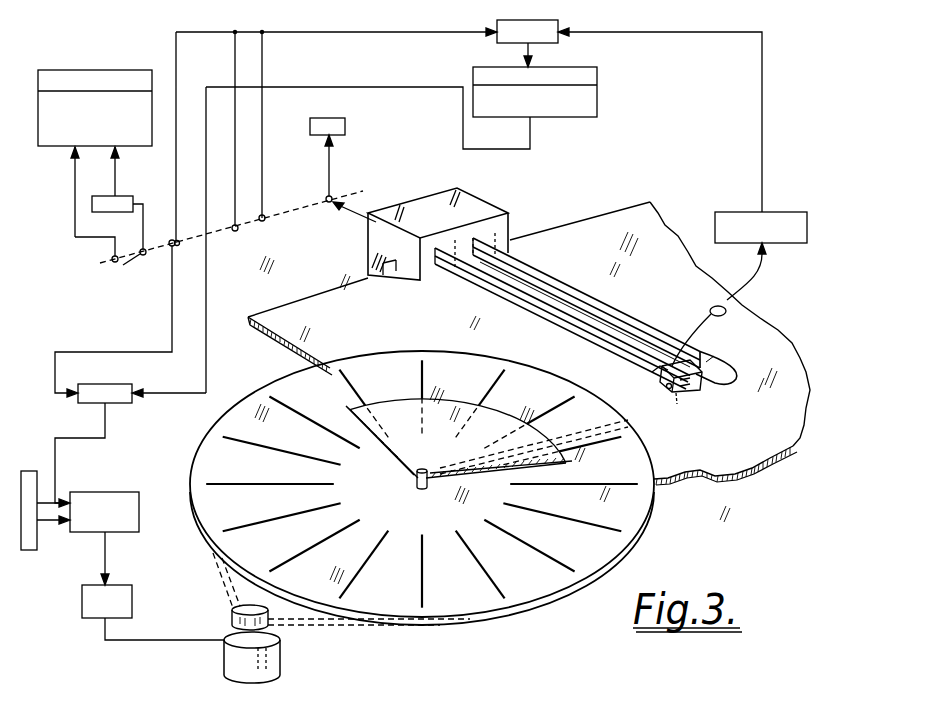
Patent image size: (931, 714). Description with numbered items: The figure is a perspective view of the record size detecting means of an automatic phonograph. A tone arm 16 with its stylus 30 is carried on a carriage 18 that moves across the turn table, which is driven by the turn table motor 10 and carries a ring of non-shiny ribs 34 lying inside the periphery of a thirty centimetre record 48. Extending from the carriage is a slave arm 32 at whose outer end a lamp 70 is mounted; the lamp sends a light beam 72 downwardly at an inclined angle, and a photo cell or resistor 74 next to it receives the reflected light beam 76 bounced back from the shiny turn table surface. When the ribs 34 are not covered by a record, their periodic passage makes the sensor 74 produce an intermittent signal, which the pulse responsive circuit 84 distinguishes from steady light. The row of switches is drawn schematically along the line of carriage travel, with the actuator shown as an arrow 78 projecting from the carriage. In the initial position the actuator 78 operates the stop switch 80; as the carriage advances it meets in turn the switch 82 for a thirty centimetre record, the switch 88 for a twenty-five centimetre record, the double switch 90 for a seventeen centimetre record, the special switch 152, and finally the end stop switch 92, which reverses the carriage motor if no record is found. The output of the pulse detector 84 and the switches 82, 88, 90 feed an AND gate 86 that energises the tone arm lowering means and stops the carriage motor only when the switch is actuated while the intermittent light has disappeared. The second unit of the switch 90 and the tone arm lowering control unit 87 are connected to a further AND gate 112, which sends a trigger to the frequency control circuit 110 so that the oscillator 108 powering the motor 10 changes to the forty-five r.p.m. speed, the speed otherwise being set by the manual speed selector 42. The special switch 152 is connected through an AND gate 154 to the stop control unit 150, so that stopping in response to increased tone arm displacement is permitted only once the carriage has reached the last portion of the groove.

The turn table motor 10 is at (280, 660).
The tone arm 16 is at (612, 303).
The carriage 18 is at (436, 204).
The stylus 30 is at (724, 385).
The slave arm 32 is at (521, 292).
The non-shiny ribs 34 is at (556, 576).
The manual speed selector 42 is at (37, 550).
The record 48 is at (406, 398).
The lamp 70 is at (693, 389).
The light beam 72 is at (680, 402).
The photo cell or resistor 74 is at (658, 372).
The reflected light beam 76 is at (668, 389).
The actuator arrow 78 is at (360, 218).
The stop switch 80 is at (327, 196).
The switch for 30 cm record 82 is at (262, 222).
The pulse responsive circuit 84 is at (772, 212).
The AND gate 86 is at (560, 44).
The tone arm lowering control unit 87 is at (597, 118).
The switch for 25 cm record 88 is at (236, 232).
The switch for 17 cm record 90 is at (178, 247).
The end stop switch 92 is at (113, 264).
The oscillator 108 is at (82, 604).
The frequency control circuit 110 is at (128, 533).
The AND gate 112 is at (118, 404).
The stop control unit 150 is at (62, 147).
The special switch 152 is at (150, 256).
The AND gate 154 is at (100, 214).